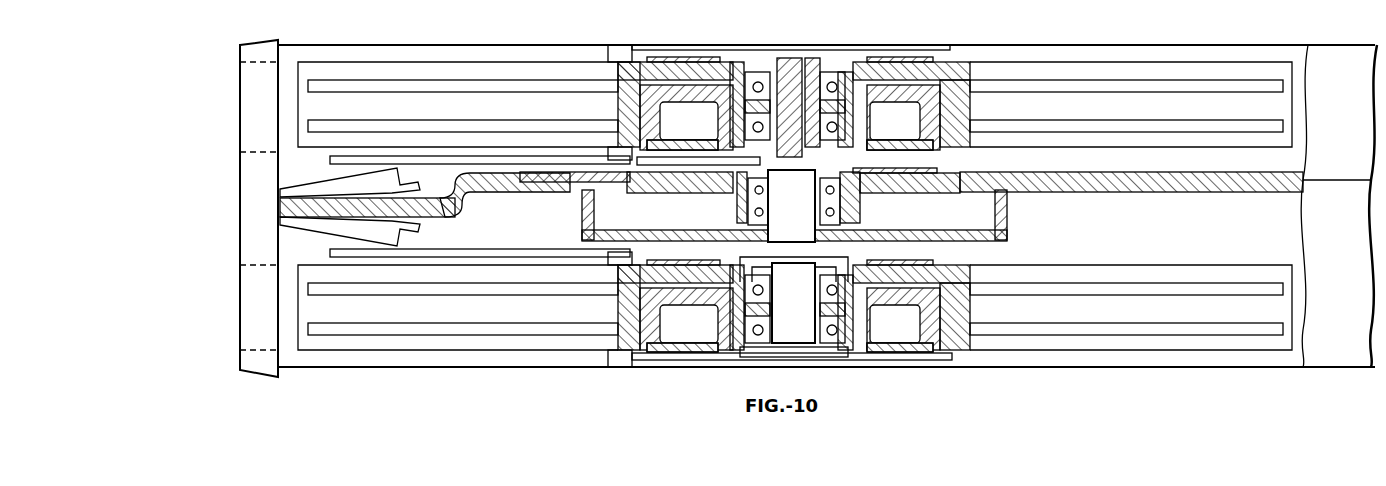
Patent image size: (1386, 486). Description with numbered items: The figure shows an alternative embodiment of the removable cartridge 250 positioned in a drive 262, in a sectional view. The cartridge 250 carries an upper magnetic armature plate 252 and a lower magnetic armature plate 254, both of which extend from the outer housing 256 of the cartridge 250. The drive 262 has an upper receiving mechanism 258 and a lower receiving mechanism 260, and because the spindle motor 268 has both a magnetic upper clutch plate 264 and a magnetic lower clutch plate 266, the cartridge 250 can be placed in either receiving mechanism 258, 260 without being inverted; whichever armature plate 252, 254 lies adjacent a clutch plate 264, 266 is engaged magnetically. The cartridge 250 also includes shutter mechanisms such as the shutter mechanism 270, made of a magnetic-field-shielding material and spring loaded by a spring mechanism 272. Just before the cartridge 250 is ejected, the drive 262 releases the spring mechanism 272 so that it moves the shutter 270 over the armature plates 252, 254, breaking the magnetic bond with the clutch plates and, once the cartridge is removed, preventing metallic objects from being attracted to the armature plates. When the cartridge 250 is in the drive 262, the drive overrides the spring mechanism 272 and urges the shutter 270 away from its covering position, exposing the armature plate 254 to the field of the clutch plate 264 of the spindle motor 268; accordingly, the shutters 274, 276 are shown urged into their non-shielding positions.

The removable cartridge 250 is at (1214, 24).
The upper magnetic armature plate 252 is at (933, 57).
The lower magnetic armature plate 254 is at (935, 137).
The outer housing 256 is at (1227, 60).
The upper receiving mechanism 258 is at (234, 106).
The lower receiving mechanism 260 is at (234, 325).
The drive 262 is at (416, 387).
The upper clutch plate 264 is at (923, 170).
The lower clutch plate 266 is at (923, 240).
The spindle motor 268 is at (1092, 215).
The shutter mechanism 270 is at (833, 50).
The spring mechanism 272 is at (617, 46).
The shutter 274 is at (378, 160).
The shutter 276 is at (405, 253).